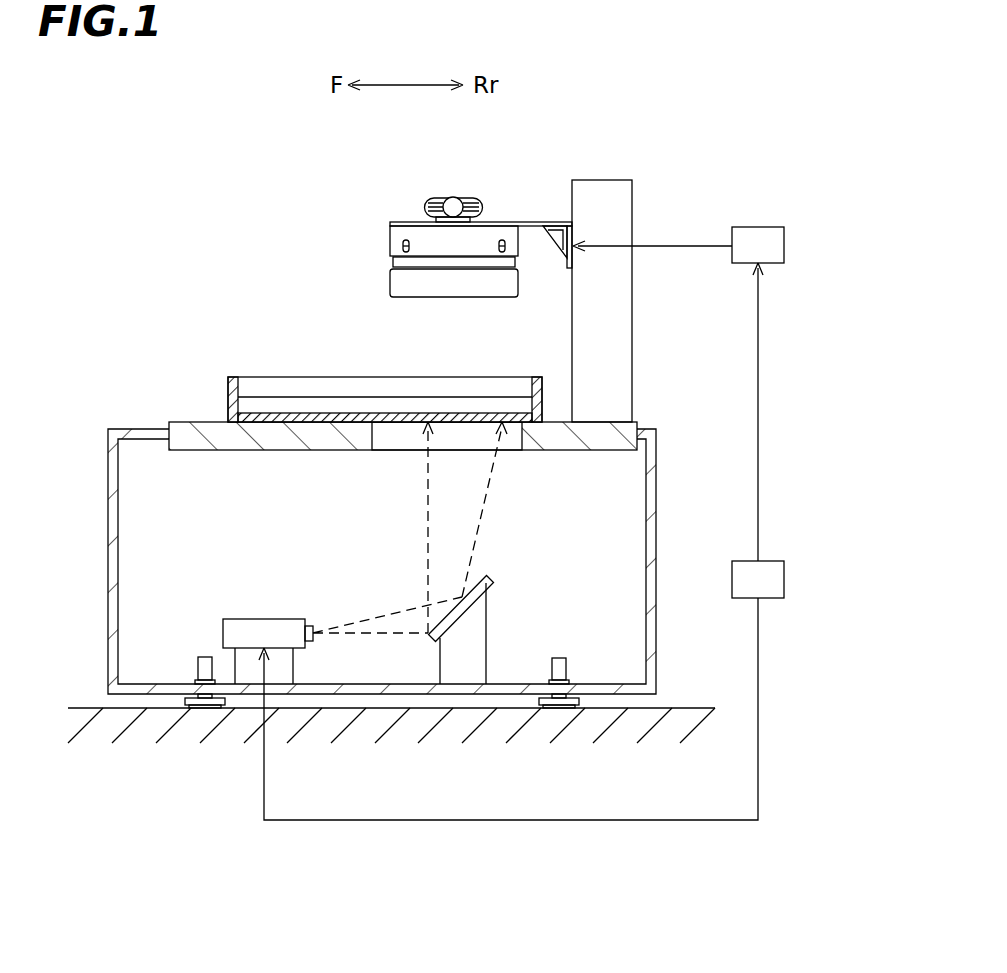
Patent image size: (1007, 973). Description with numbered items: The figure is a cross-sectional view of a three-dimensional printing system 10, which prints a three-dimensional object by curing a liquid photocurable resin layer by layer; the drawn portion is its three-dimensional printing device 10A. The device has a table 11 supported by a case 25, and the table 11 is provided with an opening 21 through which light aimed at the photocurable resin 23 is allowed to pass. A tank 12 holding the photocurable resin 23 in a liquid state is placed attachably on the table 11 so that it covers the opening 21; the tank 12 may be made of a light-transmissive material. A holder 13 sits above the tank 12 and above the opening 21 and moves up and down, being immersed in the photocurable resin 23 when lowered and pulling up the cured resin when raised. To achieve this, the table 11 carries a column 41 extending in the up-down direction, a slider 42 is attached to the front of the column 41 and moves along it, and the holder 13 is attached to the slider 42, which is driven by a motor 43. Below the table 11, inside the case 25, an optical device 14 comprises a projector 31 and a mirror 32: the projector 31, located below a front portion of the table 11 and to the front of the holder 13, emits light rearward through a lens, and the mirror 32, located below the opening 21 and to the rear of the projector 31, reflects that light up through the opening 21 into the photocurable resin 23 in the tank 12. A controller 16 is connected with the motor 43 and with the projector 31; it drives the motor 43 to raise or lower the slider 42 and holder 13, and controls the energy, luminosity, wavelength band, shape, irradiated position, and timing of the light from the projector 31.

The three-dimensional printing system 10 is at (190, 215).
The three-dimensional printing device 10A is at (95, 530).
The table 11 is at (190, 422).
The tank 12 is at (216, 384).
The holder 13 is at (383, 272).
The optical device 14 is at (255, 590).
The controller 16 is at (770, 561).
The opening 21 is at (380, 450).
The photocurable resin 23 is at (267, 397).
The case 25 is at (660, 528).
The projector 31 is at (238, 619).
The mirror 32 is at (480, 572).
The column 41 is at (633, 305).
The slider 42 is at (510, 222).
The motor 43 is at (758, 227).